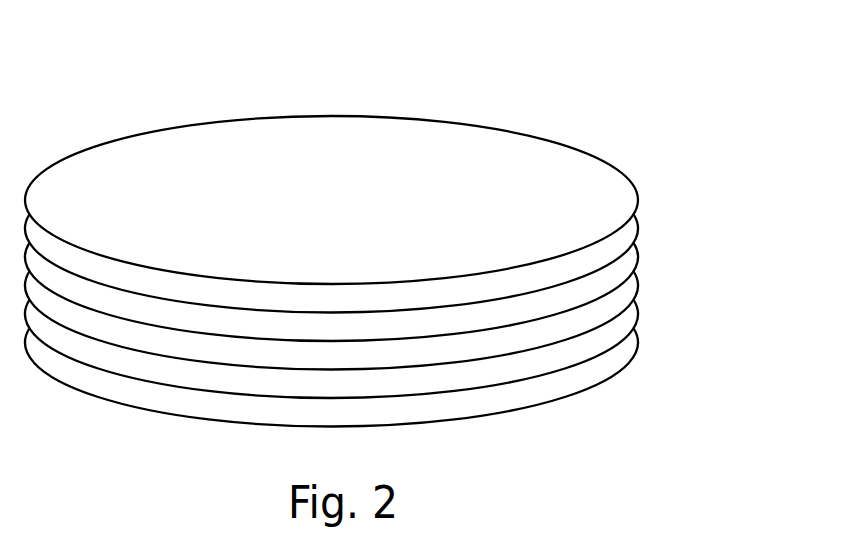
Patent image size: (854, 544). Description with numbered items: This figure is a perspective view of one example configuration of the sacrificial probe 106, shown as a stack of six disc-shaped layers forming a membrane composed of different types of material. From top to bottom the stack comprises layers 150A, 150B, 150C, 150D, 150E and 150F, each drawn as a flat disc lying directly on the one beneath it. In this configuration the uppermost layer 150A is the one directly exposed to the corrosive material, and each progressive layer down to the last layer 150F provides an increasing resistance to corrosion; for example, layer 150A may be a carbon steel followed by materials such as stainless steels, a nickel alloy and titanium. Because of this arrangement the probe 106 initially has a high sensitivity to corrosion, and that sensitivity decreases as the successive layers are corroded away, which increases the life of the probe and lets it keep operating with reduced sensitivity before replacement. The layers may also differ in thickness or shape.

The sacrificial probe 106 is at (384, 218).
The layer 150A is at (638, 199).
The layer 150B is at (638, 228).
The layer 150C is at (638, 257).
The layer 150D is at (638, 284).
The layer 150E is at (638, 312).
The layer 150F is at (638, 340).